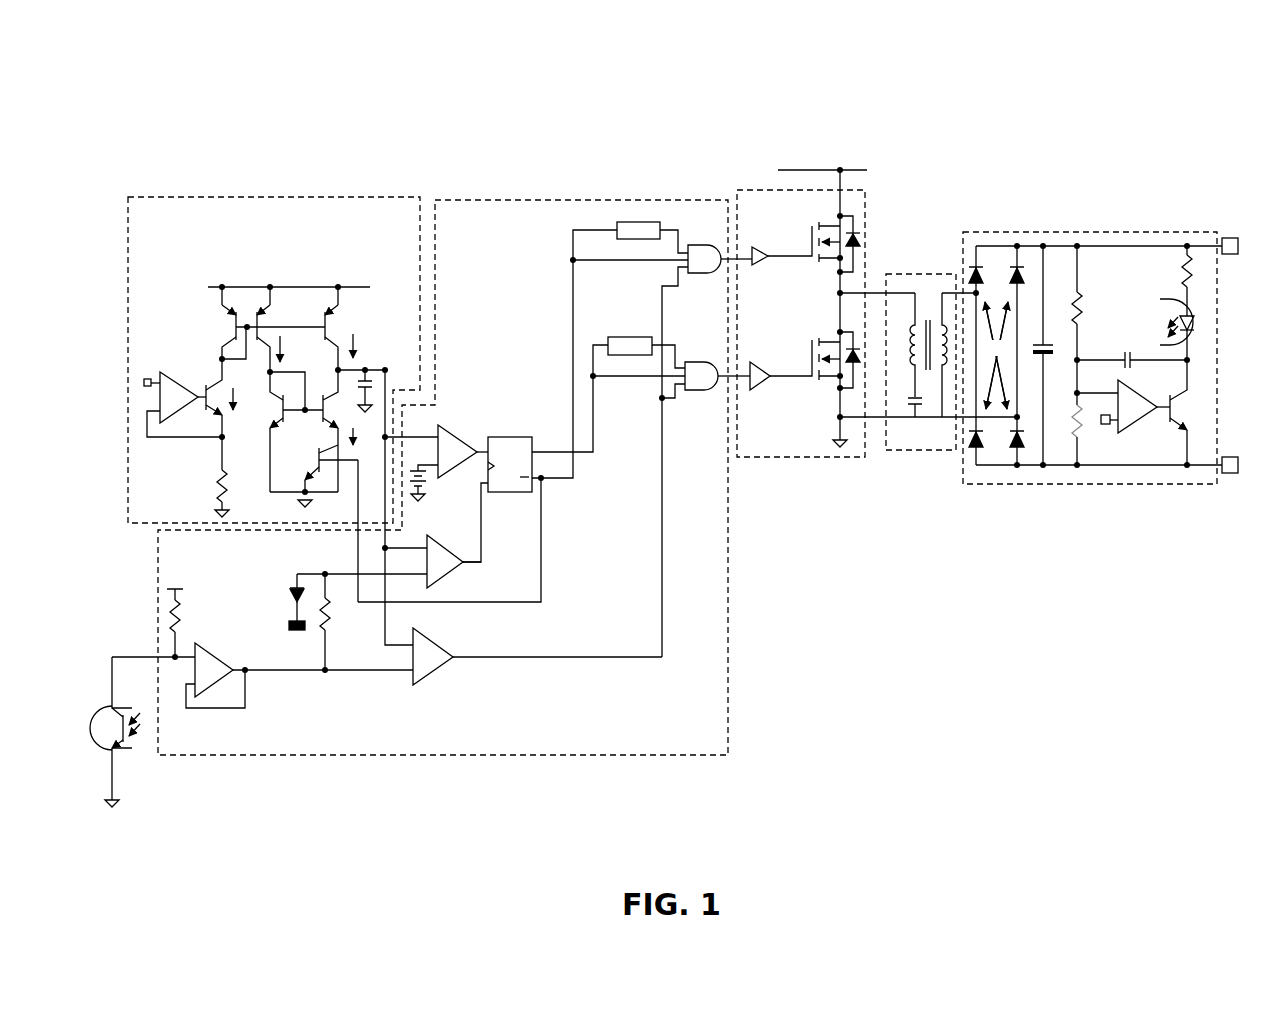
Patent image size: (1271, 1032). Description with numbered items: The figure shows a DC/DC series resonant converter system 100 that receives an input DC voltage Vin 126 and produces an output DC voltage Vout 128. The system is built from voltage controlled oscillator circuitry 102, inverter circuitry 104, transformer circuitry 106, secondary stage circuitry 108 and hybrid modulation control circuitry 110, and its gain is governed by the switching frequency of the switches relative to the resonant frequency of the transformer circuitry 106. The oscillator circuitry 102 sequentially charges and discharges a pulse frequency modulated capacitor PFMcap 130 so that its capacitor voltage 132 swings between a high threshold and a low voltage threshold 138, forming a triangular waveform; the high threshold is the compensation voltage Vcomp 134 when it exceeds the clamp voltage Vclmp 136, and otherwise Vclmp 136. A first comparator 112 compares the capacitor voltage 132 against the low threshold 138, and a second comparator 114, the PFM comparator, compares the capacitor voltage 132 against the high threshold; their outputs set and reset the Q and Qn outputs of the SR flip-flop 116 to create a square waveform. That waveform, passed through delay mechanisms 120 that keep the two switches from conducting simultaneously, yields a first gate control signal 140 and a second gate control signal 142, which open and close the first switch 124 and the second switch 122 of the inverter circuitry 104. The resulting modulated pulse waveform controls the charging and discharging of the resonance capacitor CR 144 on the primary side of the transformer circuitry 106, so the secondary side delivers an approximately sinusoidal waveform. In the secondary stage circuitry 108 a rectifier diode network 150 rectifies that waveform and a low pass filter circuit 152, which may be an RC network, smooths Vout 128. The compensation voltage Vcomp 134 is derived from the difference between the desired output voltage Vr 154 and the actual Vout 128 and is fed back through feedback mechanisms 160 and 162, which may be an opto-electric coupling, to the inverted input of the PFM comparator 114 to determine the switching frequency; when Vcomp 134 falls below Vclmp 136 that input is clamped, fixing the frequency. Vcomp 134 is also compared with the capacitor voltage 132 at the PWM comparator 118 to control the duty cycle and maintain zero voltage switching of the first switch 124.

The DC/DC series resonant converter system 100 is at (692, 55).
The voltage controlled oscillator circuitry 102 is at (183, 197).
The inverter circuitry 104 is at (742, 190).
The transformer circuitry 106 is at (921, 272).
The secondary stage circuitry 108 is at (1118, 232).
The hybrid modulation control circuitry 110 is at (345, 757).
The first comparator 112 is at (453, 425).
The second comparator (PFM comparator) 114 is at (440, 591).
The SR flip-flop 116 is at (515, 428).
The PWM comparator 118 is at (430, 690).
The delay mechanism 120 is at (632, 221).
The switch Q2 122 is at (803, 208).
The switch Q1 124 is at (808, 331).
The input DC voltage Vin 126 is at (770, 160).
The output DC voltage Vout 128 is at (1198, 212).
The pulse frequency modulated capacitor PFMcap 130 is at (378, 378).
The capacitor voltage VCT 132 is at (415, 364).
The compensation voltage Vcomp 134 is at (135, 632).
The clamp voltage Vclmp 136 is at (275, 604).
The low voltage threshold VTL 138 is at (428, 490).
The gate control signal VGS1 140 is at (793, 410).
The gate control signal VGS2 142 is at (790, 287).
The resonance capacitor CR 144 is at (899, 408).
The rectifier diode network 150 is at (996, 355).
The low pass filter circuit 152 is at (1130, 344).
The desired output voltage Vr 154 is at (1108, 453).
The feedback mechanism 160 is at (1226, 333).
The feedback mechanism 162 is at (93, 752).